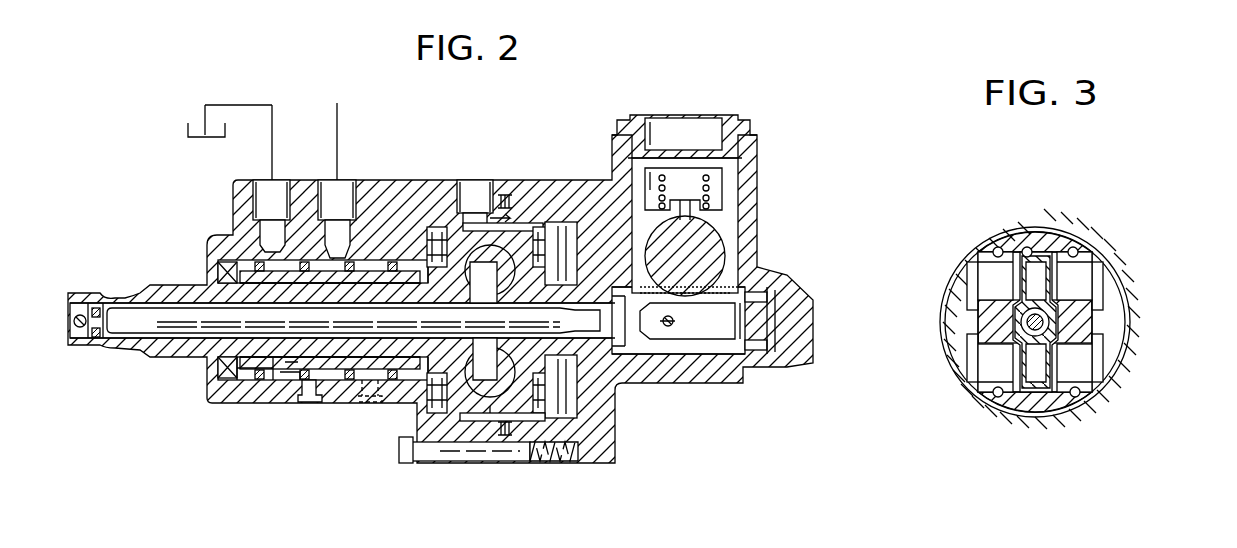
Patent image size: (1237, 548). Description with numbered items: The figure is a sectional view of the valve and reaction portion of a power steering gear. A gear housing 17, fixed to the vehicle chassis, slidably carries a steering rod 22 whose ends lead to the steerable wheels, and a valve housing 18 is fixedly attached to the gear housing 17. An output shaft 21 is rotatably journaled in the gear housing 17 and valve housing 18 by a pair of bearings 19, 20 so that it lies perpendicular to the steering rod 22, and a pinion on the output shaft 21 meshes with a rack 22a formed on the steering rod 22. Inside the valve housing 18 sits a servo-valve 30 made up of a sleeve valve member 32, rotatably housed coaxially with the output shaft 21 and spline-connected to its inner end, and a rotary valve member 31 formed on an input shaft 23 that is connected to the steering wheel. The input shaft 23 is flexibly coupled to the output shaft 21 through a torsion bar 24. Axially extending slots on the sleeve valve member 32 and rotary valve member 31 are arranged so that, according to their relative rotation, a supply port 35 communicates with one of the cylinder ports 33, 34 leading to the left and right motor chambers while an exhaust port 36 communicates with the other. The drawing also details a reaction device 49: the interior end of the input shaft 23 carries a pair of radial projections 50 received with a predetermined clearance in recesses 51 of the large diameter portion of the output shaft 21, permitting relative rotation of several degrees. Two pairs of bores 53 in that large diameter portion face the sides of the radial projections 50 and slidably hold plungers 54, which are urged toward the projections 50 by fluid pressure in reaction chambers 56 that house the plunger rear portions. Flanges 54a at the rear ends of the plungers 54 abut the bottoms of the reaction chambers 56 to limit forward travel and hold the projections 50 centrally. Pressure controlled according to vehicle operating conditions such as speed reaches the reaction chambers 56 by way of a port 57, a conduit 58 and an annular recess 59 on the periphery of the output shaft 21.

In FIG. 2, the gear housing 17 is at (595, 193).
In FIG. 2, the valve housing 18 is at (442, 440).
In FIG. 2, the bearing 19 is at (760, 345).
In FIG. 2, the bearing 20 is at (423, 453).
In FIG. 2, the output shaft 21 is at (692, 323).
In FIG. 2, the steering rod 22 is at (710, 240).
In FIG. 2, the rack 22a is at (700, 285).
In FIG. 2, the input shaft 23 is at (160, 288).
In FIG. 2, the torsion bar 24 is at (207, 313).
In FIG. 2, the servo-valve 30 is at (362, 257).
In FIG. 2, the rotary valve member 31 is at (273, 352).
In FIG. 2, the sleeve valve member 32 is at (292, 372).
In FIG. 2, the cylinder port 33 is at (310, 402).
In FIG. 2, the cylinder port 34 is at (362, 398).
In FIG. 2, the supply port 35 is at (346, 192).
In FIG. 2, the exhaust port 36 is at (262, 195).
In FIG. 2, the reaction device 49 is at (479, 388).
In FIG. 3, the reaction device 49 is at (1068, 228).
In FIG. 2, the radial projection 50 is at (492, 273).
In FIG. 3, the radial projection 50 is at (1038, 272).
In FIG. 3, the recess 51 is at (1008, 250).
In FIG. 3, the bore 53 is at (985, 245).
In FIG. 3, the plunger 54 is at (1080, 280).
In FIG. 3, the flange 54a is at (968, 266).
In FIG. 3, the reaction chamber 56 is at (958, 328).
In FIG. 2, the port 57 is at (466, 187).
In FIG. 2, the conduit 58 is at (477, 223).
In FIG. 2, the annular recess 59 is at (512, 228).